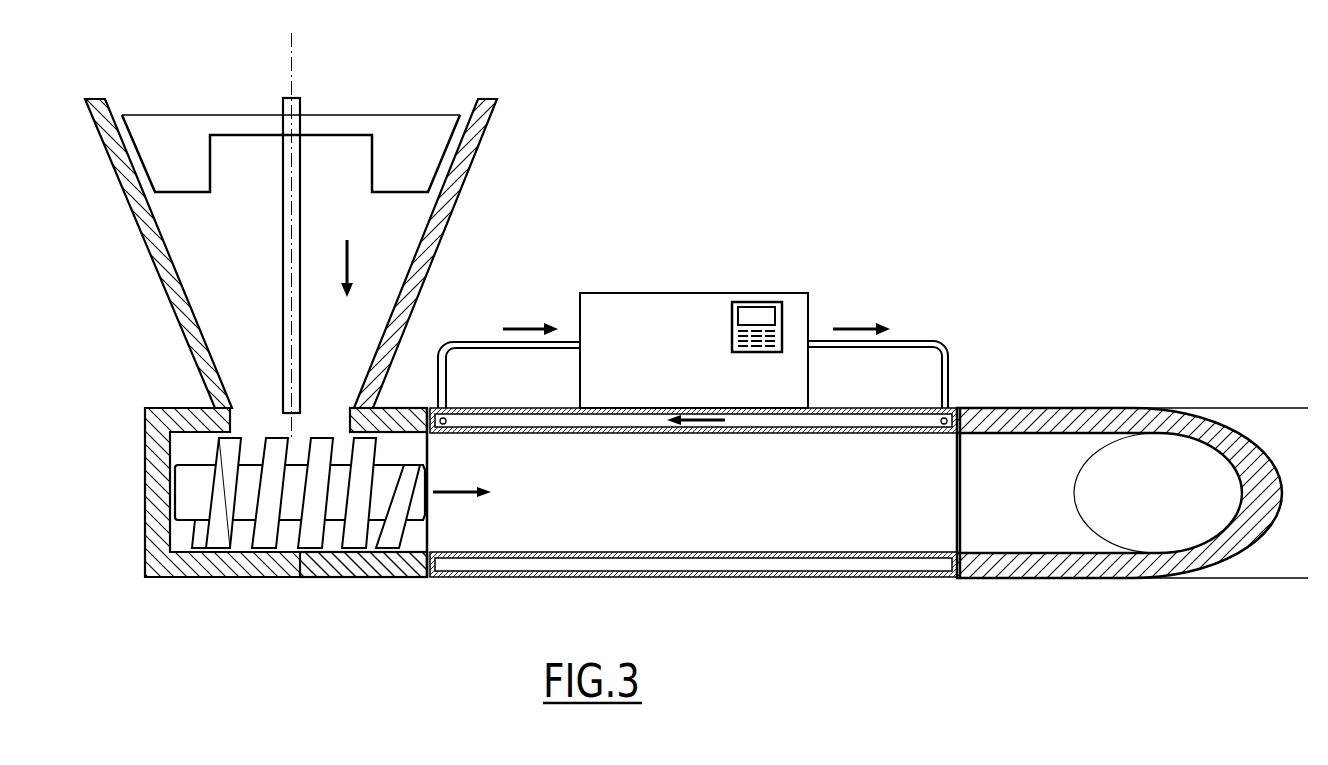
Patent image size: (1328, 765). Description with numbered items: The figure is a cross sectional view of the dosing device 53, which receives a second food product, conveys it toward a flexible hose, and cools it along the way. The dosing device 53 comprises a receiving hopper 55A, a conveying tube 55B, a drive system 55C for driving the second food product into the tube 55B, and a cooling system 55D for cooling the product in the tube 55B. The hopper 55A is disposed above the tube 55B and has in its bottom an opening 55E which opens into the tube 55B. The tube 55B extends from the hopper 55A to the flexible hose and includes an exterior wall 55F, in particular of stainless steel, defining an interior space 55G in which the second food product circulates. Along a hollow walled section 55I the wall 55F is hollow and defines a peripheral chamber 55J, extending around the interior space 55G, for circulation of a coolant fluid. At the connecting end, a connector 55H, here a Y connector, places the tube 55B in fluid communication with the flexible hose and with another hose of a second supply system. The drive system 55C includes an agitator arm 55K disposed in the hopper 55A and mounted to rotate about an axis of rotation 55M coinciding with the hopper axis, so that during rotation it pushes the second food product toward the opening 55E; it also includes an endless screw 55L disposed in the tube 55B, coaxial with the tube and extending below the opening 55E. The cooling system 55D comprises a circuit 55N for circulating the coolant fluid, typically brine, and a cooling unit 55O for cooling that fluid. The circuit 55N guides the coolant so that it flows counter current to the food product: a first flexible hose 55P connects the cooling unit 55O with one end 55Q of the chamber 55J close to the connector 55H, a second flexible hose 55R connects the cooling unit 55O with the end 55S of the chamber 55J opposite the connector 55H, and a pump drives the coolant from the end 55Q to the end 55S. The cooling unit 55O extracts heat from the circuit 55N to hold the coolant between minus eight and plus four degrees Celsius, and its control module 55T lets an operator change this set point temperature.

The dosing device 53 is at (1093, 266).
The receiving hopper 55A is at (485, 133).
The conveying tube 55B is at (286, 514).
The drive system 55C is at (300, 491).
The cooling system 55D is at (694, 291).
The opening 55E is at (350, 423).
The exterior wall 55F is at (403, 563).
The interior space 55G is at (812, 493).
The connector 55H is at (1045, 407).
The hollow walled section 55I is at (693, 523).
The peripheral chamber 55J is at (855, 423).
The agitator arm 55K is at (413, 122).
The endless screw 55L is at (260, 447).
The axis of rotation 55M is at (292, 53).
The circuit 55N is at (727, 406).
The cooling unit 55O is at (638, 303).
The first flexible hose 55P is at (910, 342).
The end of the chamber 55Q is at (920, 447).
The second flexible hose 55R is at (478, 342).
The end of the chamber 55S is at (448, 433).
The control module 55T is at (758, 302).